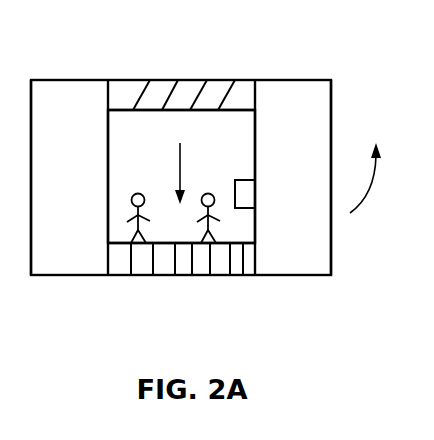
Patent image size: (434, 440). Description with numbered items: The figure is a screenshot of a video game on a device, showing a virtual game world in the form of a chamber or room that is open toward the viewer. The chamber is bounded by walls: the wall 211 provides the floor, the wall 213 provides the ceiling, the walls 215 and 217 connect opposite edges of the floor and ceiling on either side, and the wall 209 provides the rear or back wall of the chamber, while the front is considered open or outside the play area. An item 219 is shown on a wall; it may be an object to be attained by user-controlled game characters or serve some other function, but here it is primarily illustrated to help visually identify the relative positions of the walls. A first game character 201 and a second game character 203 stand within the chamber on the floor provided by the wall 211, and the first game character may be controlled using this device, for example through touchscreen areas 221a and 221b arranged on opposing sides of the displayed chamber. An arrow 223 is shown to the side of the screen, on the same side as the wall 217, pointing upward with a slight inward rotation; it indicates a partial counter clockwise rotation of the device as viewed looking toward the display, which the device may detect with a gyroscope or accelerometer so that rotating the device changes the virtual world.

The first game character 201 is at (137, 225).
The second game character 203 is at (207, 225).
The rear wall 209 is at (152, 150).
The floor wall 211 is at (243, 262).
The ceiling wall 213 is at (240, 110).
The side wall 215 is at (107, 195).
The side wall 217 is at (257, 142).
The item 219 is at (246, 177).
The touchscreen area 221a is at (91, 150).
The touchscreen area 221b is at (272, 220).
The arrow 223 is at (363, 202).